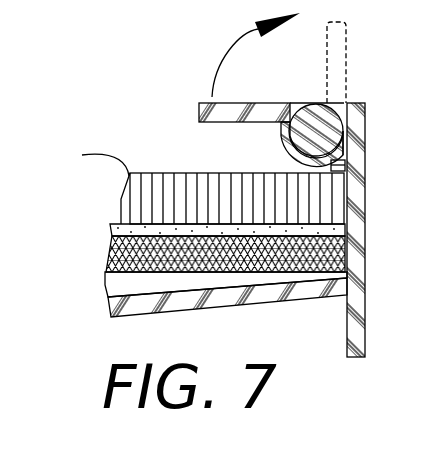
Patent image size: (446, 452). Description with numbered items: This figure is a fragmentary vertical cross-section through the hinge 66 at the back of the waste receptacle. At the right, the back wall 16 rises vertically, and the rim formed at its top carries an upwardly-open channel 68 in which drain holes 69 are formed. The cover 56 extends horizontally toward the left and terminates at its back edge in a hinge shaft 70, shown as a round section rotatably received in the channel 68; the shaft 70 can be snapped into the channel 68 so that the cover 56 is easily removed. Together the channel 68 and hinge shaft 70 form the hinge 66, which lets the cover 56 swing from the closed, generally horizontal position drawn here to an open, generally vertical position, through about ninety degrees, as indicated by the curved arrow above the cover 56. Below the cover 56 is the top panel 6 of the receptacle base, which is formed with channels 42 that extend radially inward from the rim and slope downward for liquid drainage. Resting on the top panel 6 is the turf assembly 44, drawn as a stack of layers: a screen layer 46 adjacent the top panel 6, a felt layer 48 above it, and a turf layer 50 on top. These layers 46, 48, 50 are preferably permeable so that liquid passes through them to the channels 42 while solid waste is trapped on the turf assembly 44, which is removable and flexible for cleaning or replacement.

The top panel 6 is at (108, 318).
The back wall 16 is at (365, 355).
The channel 42 is at (108, 286).
The turf assembly 44 is at (194, 205).
The screen layer 46 is at (108, 256).
The felt layer 48 is at (112, 224).
The turf layer 50 is at (122, 196).
The cover 56 is at (205, 103).
The hinge 66 is at (281, 139).
The upwardly-open channel 68 is at (335, 105).
The drain holes 69 is at (340, 168).
The hinge shaft 70 is at (347, 132).